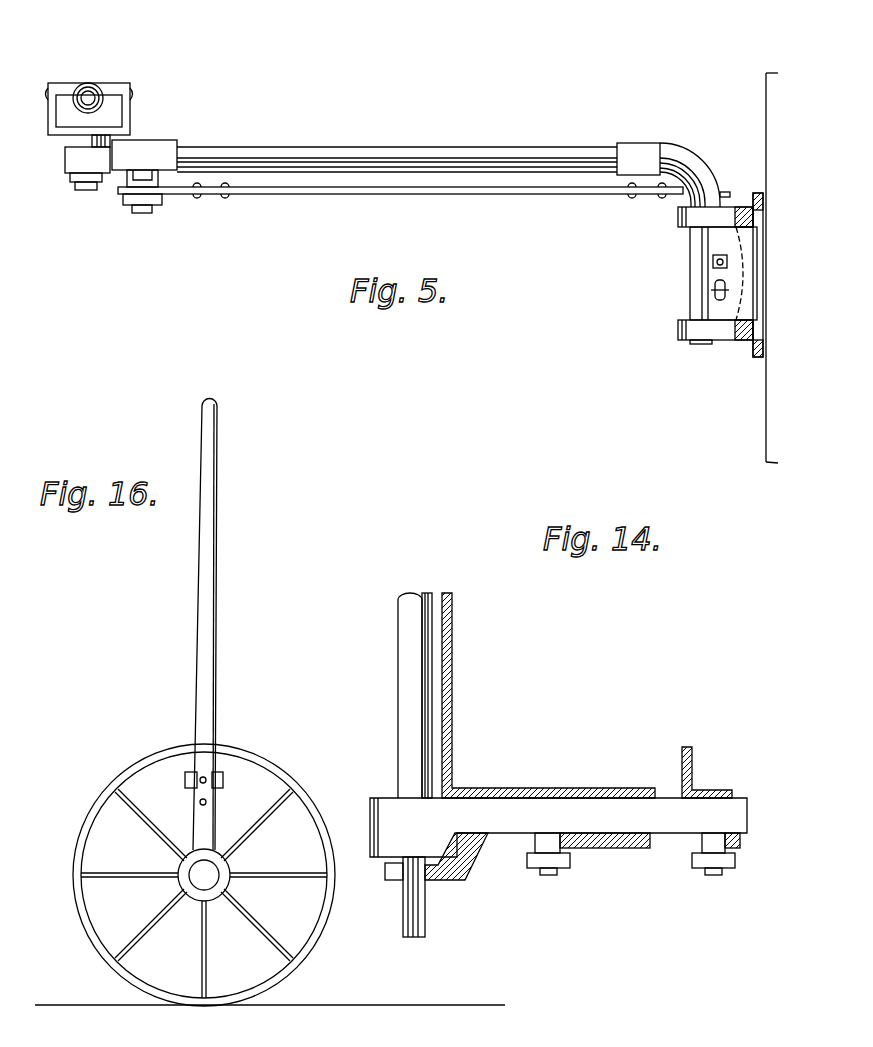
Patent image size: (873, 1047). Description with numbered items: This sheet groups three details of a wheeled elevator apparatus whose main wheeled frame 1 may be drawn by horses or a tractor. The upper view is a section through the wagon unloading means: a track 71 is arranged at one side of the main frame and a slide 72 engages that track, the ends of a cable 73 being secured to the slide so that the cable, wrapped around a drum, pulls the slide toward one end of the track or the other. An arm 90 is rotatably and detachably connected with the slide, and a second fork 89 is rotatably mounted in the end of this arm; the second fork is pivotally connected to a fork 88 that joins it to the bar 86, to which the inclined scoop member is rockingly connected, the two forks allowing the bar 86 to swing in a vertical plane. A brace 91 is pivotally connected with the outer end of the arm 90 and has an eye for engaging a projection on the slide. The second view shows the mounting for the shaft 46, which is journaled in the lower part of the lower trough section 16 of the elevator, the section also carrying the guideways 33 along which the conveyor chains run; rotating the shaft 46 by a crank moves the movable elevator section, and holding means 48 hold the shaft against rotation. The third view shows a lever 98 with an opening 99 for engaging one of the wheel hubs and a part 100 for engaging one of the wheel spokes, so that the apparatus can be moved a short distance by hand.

In FIG. 5, the wheeled frame 1 is at (767, 447).
In FIG. 14, the lower trough section 16 is at (452, 663).
In FIG. 14, the guideways 33 is at (692, 760).
In FIG. 14, the shaft 46 is at (408, 615).
In FIG. 14, the holding means 48 is at (463, 878).
In FIG. 5, the track 71 is at (747, 193).
In FIG. 5, the slide 72 is at (755, 242).
In FIG. 5, the cable 73 is at (717, 298).
In FIG. 5, the bar 86 is at (90, 87).
In FIG. 5, the fork 88 is at (112, 88).
In FIG. 5, the second fork 89 is at (130, 117).
In FIG. 5, the arm 90 is at (373, 153).
In FIG. 5, the brace 91 is at (298, 190).
In FIG. 16, the lever 98 is at (205, 457).
In FIG. 16, the opening 99 is at (197, 877).
In FIG. 16, the part 100 is at (187, 777).